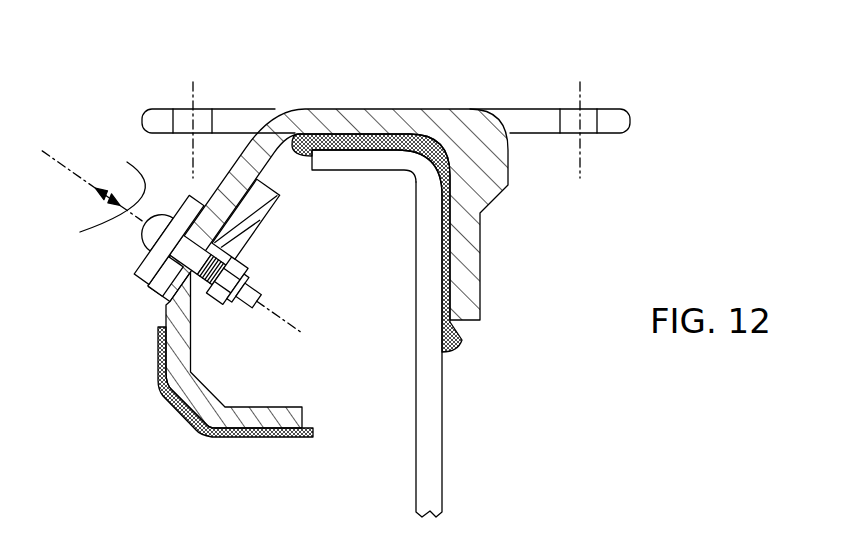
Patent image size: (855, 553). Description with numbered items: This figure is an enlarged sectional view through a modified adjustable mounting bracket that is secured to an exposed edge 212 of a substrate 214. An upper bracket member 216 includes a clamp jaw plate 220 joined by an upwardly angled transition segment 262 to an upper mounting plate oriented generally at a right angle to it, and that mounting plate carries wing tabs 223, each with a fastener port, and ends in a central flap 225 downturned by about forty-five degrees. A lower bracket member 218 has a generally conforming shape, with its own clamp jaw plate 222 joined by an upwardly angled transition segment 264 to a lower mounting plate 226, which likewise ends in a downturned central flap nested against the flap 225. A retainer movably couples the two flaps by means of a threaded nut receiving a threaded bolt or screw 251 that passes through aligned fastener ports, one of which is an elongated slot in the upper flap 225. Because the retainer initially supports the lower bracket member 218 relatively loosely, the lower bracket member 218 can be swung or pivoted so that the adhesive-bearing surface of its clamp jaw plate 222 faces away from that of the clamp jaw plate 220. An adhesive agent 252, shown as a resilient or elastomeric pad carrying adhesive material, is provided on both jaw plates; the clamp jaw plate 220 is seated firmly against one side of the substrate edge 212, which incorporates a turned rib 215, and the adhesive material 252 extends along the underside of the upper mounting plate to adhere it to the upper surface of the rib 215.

The exposed edge 212 is at (437, 387).
The substrate 214 is at (407, 462).
The turned rib 215 is at (365, 172).
The upper bracket member 216 is at (472, 91).
The lower bracket member 218 is at (141, 432).
The clamp jaw plate 220 is at (467, 282).
The clamp jaw plate 222 is at (280, 407).
The wing tabs 223 is at (632, 123).
The central flap 225 is at (240, 153).
The lower mounting plate 226 is at (380, 108).
The threaded bolt or screw 251 is at (143, 233).
The adhesive agent 252 is at (458, 347).
The transition segment 262 is at (500, 165).
The transition segment 264 is at (210, 387).